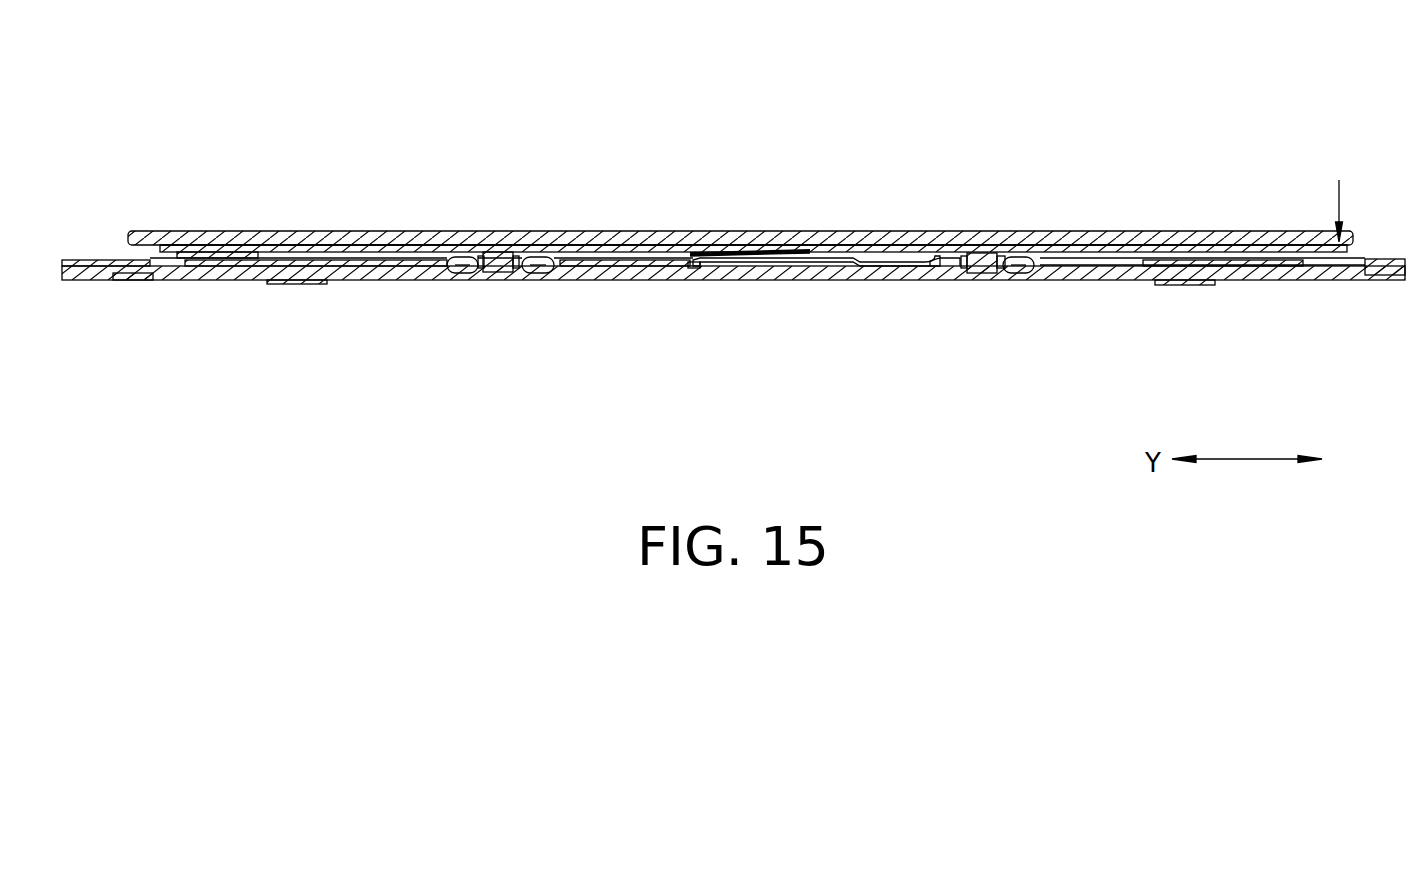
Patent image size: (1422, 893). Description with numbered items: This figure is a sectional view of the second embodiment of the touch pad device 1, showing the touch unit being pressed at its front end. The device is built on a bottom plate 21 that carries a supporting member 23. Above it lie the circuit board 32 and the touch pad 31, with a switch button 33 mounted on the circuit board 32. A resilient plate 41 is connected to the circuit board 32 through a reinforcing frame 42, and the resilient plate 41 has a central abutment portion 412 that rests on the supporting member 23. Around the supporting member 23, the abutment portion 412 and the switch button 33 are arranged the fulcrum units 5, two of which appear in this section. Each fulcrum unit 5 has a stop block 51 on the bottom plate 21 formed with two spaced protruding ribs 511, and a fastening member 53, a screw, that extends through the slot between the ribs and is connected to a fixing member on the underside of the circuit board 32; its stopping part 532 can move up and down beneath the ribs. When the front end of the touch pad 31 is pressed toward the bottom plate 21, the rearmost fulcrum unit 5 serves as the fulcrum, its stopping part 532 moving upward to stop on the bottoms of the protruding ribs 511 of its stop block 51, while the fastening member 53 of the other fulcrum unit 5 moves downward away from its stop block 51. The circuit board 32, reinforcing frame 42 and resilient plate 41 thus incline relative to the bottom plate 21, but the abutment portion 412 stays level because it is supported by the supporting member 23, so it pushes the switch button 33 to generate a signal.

The touch pad device 1 is at (733, 235).
The bottom plate 21 is at (828, 280).
The supporting member 23 is at (763, 268).
The touch pad 31 is at (897, 236).
The circuit board 32 is at (940, 262).
The switch button 33 is at (745, 250).
The resilient plate 41 is at (853, 244).
The abutment portion 412 is at (690, 280).
The reinforcing frame 42 is at (1268, 262).
The fulcrum unit 5 is at (742, 289).
The stop block 51 is at (462, 262).
The protruding rib 511 is at (540, 262).
The fastening member 53 is at (497, 282).
The stopping part 532 is at (473, 274).